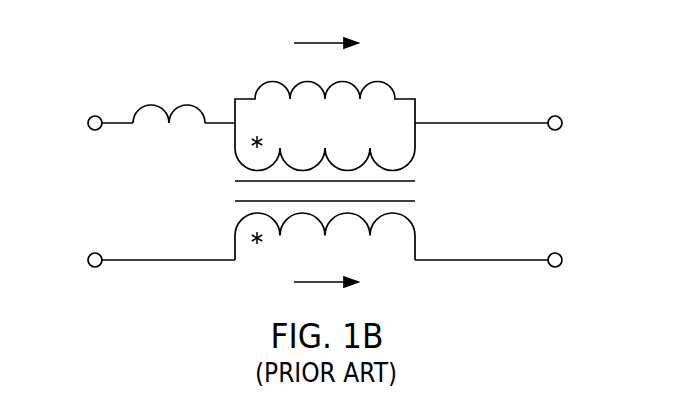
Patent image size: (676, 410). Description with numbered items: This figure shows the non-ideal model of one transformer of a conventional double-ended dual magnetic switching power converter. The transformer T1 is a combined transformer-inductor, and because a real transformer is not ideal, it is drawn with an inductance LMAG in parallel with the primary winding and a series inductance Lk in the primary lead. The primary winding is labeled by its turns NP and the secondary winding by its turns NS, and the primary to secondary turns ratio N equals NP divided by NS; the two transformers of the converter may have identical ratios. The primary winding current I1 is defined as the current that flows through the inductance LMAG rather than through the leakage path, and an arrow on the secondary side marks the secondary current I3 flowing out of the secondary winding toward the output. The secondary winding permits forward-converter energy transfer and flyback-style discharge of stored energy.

The series inductance Lk is at (169, 99).
The inductance Lmag LMAG is at (325, 100).
The primary winding current I1 is at (326, 30).
The primary winding turns NP is at (343, 153).
The first transformer T1 is at (311, 193).
The secondary winding turns NS is at (343, 236).
The secondary current I3 is at (326, 269).